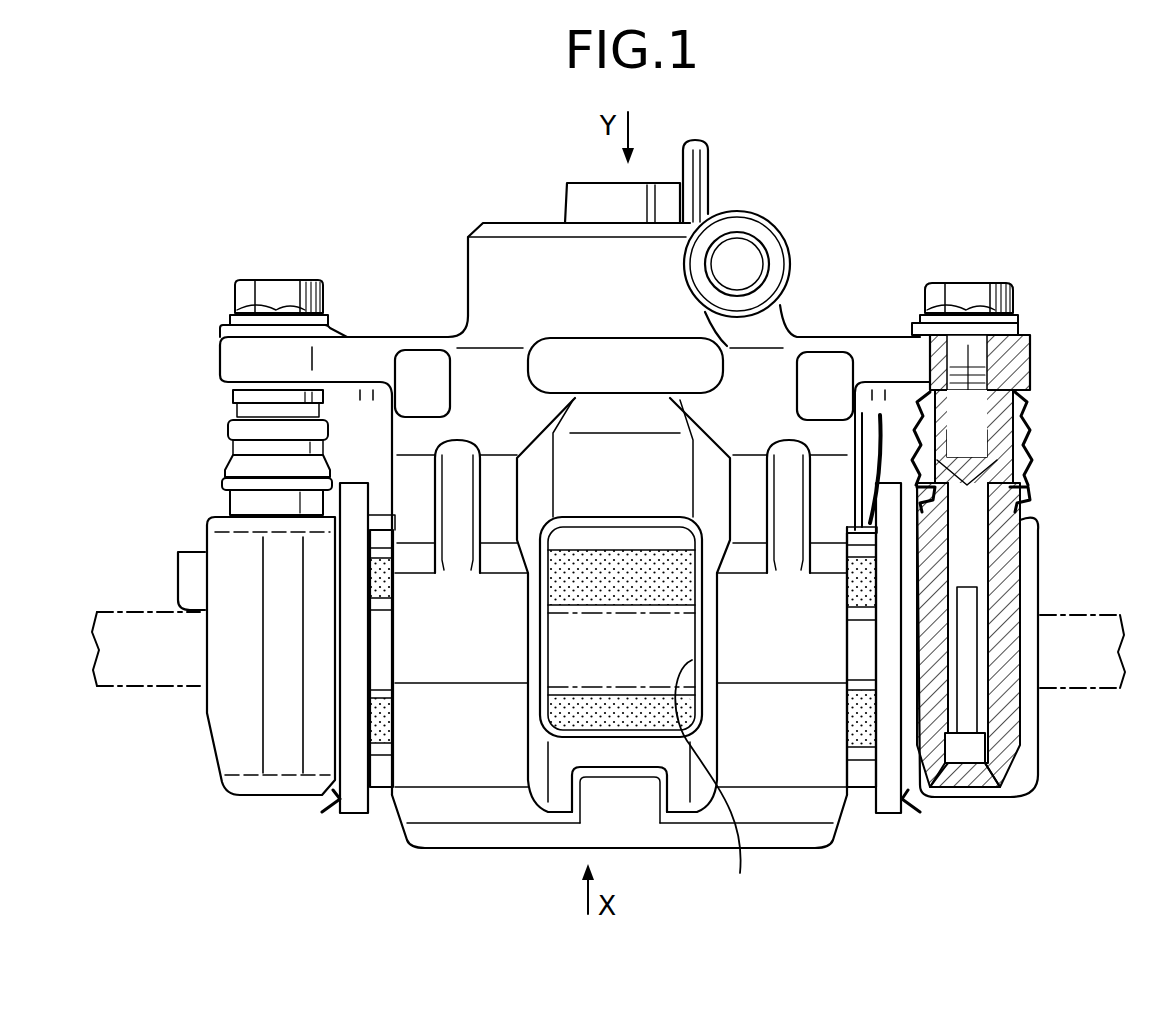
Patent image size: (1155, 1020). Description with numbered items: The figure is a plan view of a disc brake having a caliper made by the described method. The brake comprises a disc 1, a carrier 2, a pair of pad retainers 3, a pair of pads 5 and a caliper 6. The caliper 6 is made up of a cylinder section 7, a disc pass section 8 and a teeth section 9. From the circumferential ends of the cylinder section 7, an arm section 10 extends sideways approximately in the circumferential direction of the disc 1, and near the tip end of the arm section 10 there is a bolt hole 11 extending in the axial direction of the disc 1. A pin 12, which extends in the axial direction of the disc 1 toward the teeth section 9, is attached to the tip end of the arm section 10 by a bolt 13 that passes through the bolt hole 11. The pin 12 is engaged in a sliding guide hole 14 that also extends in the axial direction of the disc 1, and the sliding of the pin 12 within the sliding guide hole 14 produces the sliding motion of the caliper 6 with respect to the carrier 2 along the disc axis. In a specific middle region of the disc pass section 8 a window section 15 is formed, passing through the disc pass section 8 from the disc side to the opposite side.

The disc 1 is at (1093, 607).
The carrier 2 is at (1050, 514).
The pad retainers 3 is at (353, 813).
The pads 5 is at (557, 612).
The caliper 6 is at (793, 322).
The cylinder section 7 is at (460, 307).
The disc pass section 8 is at (380, 633).
The teeth section 9 is at (519, 856).
The arm section 10 is at (362, 337).
The bolt hole 11 is at (1030, 345).
The pin 12 is at (1020, 518).
The bolt 13 is at (288, 297).
The sliding guide hole 14 is at (978, 570).
The window section 15 is at (715, 783).